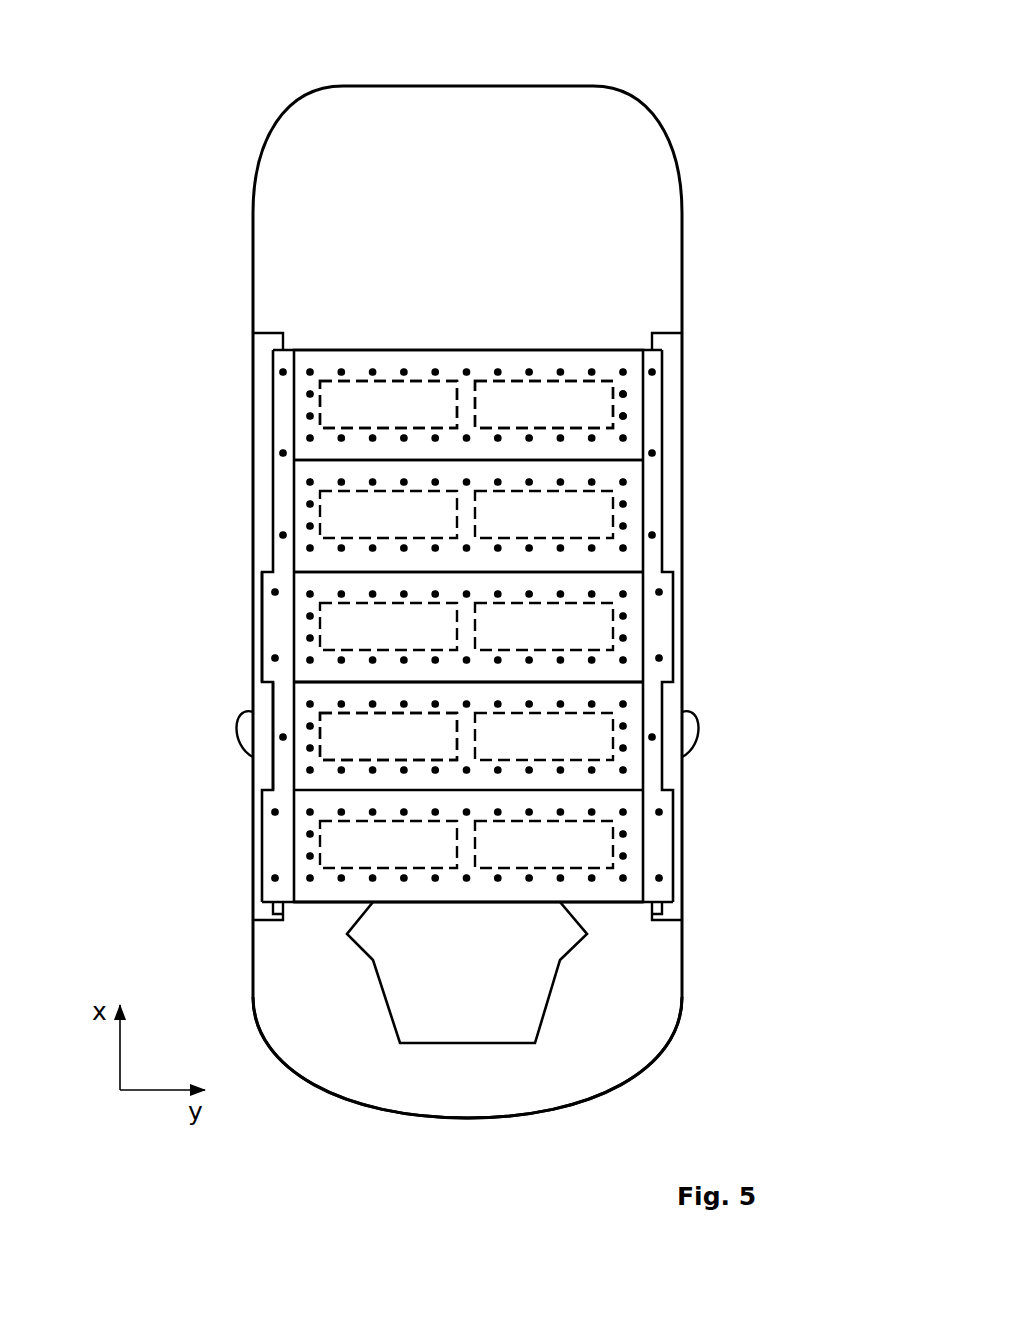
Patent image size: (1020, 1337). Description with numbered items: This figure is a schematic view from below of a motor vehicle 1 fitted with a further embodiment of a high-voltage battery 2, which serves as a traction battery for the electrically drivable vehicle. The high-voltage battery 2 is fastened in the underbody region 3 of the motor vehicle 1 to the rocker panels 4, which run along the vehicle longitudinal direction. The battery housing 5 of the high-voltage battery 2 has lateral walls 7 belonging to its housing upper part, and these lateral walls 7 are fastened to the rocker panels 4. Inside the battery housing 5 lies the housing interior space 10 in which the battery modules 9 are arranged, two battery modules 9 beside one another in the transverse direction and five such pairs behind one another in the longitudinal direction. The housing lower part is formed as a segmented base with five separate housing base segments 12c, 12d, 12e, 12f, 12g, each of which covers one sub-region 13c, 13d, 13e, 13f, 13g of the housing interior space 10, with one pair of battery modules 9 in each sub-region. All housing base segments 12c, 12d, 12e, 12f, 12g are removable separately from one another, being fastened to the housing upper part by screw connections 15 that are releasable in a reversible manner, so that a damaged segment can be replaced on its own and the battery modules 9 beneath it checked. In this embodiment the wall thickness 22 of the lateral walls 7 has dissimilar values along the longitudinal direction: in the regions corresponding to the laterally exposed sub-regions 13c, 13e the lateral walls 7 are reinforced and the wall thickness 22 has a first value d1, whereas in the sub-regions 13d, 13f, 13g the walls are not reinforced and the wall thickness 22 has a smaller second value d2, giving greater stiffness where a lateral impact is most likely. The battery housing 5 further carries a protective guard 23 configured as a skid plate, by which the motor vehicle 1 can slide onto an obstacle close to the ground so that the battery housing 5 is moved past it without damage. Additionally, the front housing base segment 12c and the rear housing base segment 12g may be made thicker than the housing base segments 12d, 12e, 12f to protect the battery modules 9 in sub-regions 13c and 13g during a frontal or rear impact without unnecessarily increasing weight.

The motor vehicle 1 is at (481, 86).
The high-voltage battery 2 is at (495, 279).
The underbody region 3 is at (665, 972).
The rocker panels 4 is at (253, 333).
The battery housing 5 is at (605, 350).
The lateral walls 7 is at (262, 626).
The battery modules 9 is at (388, 382).
The housing interior space 10 is at (378, 779).
The housing base segment 12c is at (617, 803).
The housing base segment 12d is at (615, 782).
The housing base segment 12e is at (617, 585).
The housing base segment 12f is at (615, 477).
The housing base segment 12g is at (450, 366).
The sub-region 13c is at (322, 893).
The sub-region 13d is at (322, 692).
The sub-region 13e is at (322, 673).
The sub-region 13f is at (613, 562).
The sub-region 13g is at (322, 450).
The screw connections 15 is at (623, 393).
The wall thickness 22 is at (274, 906).
The protective guard 23 is at (468, 1043).
The first value d1 is at (330, 582).
The second value d2 is at (330, 780).